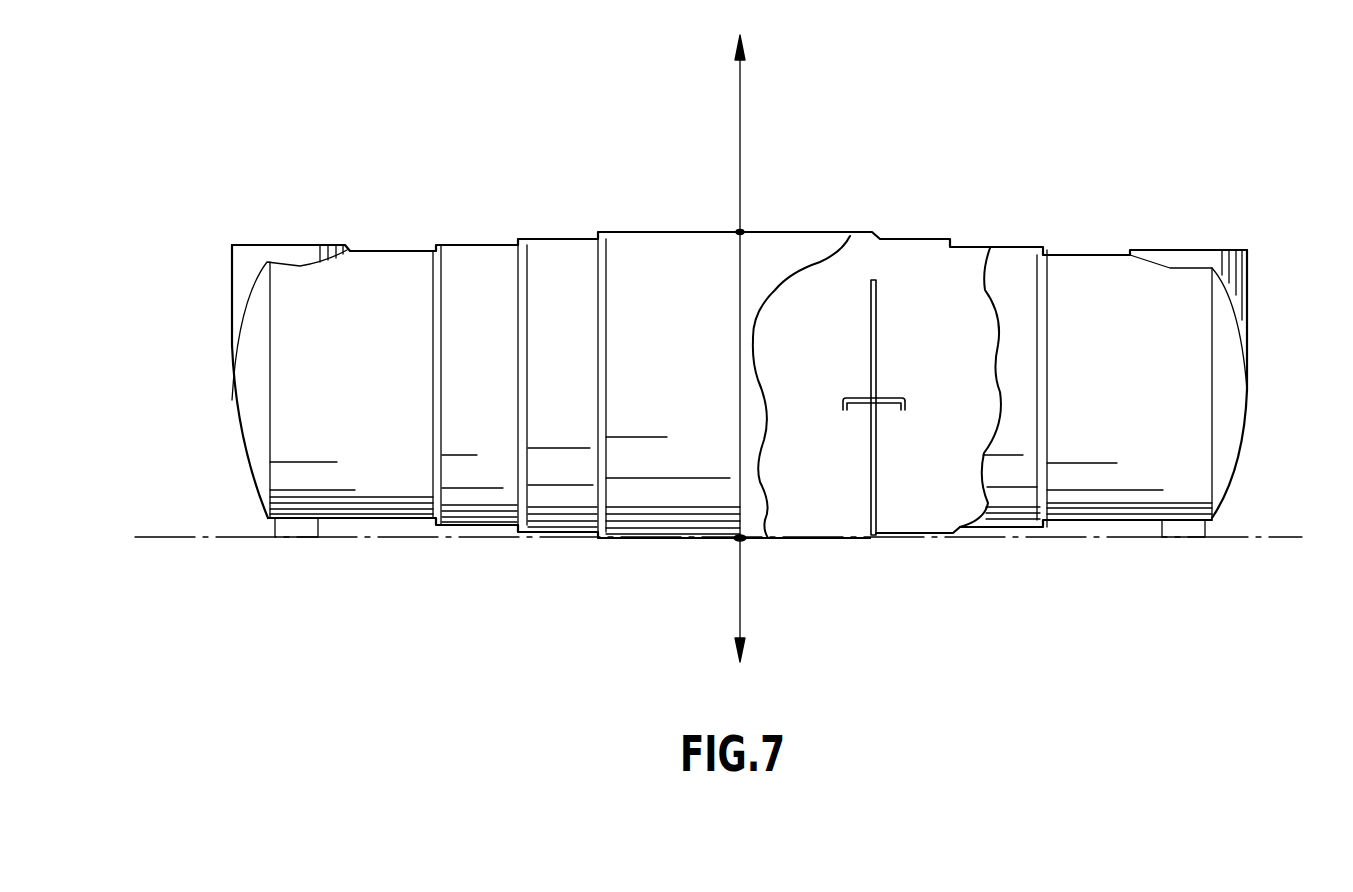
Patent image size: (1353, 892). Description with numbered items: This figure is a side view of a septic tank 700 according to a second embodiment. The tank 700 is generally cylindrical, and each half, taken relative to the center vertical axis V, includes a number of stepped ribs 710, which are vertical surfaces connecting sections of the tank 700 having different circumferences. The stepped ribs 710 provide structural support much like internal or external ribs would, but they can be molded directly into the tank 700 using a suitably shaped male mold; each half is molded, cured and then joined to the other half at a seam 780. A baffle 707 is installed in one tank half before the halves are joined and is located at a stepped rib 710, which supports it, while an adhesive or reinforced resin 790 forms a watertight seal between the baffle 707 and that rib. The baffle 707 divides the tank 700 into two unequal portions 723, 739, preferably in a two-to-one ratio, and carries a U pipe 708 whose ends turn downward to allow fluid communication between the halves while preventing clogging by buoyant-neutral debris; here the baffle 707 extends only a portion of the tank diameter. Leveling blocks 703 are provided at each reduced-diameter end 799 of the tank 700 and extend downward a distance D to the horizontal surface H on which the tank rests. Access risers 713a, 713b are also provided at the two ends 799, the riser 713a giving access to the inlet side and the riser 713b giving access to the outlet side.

The tank 700 is at (1123, 178).
The leveling blocks 703 is at (307, 528).
The baffle 707 is at (870, 333).
The U pipe 708 is at (899, 398).
The stepped ribs 710 is at (598, 234).
The access riser 713a is at (240, 278).
The access riser 713b is at (1244, 273).
The tank portion 723 is at (1102, 384).
The tank portion 739 is at (517, 407).
The seam 780 is at (742, 232).
The adhesive or reinforced resin 790 is at (867, 534).
The reduced-diameter end 799 is at (232, 428).
The distance D is at (266, 524).
The horizontal surface H is at (1270, 545).
The center vertical axis V is at (745, 105).